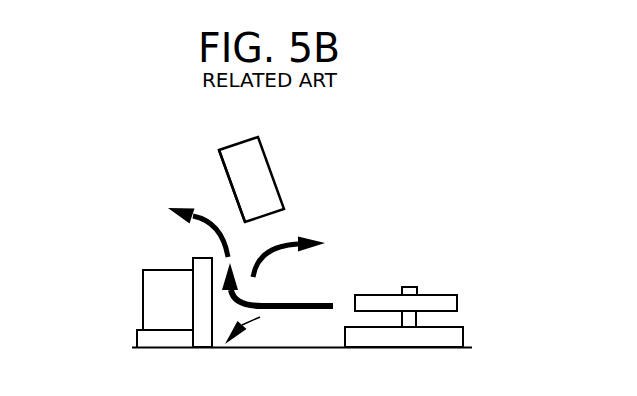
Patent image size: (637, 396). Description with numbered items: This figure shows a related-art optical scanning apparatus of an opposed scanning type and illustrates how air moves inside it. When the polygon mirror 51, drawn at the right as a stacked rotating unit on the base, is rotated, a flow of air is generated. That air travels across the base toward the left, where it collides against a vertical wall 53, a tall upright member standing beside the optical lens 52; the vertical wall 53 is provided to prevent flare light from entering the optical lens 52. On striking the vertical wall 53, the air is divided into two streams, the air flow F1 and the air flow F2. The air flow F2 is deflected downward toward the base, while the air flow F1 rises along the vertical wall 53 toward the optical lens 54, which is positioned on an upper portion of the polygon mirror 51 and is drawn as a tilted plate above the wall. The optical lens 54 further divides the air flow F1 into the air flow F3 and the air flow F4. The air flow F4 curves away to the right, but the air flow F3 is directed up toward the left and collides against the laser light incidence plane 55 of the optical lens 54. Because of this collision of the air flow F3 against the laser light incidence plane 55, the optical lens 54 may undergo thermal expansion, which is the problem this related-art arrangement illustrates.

The polygon mirror 51 is at (435, 295).
The optical lens 52 is at (143, 291).
The vertical wall 53 is at (193, 338).
The optical lens 54 is at (262, 170).
The laser light incidence plane 55 is at (223, 173).
The air flow F1 is at (295, 309).
The air flow F2 is at (238, 342).
The air flow F3 is at (181, 229).
The air flow F4 is at (278, 240).